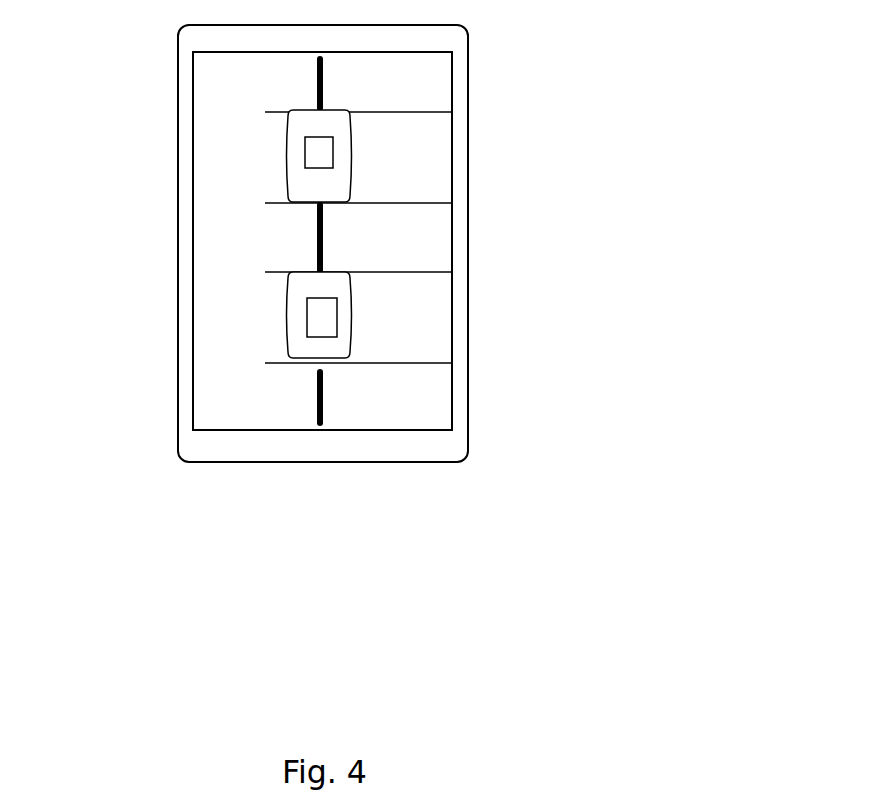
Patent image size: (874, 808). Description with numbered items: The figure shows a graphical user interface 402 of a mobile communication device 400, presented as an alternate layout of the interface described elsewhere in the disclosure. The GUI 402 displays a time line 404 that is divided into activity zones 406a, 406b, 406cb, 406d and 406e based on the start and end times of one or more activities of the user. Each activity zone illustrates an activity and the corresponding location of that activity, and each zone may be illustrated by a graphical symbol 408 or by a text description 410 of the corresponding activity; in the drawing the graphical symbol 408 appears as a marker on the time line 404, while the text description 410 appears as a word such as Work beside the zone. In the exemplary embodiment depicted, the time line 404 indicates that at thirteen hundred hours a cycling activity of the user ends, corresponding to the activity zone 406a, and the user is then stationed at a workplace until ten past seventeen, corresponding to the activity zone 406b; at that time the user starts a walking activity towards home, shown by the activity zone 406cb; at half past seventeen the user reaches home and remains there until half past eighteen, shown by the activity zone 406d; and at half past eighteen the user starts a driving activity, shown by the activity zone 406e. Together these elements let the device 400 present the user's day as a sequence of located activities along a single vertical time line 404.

The mobile communication device 400 is at (198, 40).
The graphical user interface 402 is at (212, 82).
The time line 404 is at (225, 130).
The activity zone 406a is at (427, 70).
The activity zone 406b is at (410, 178).
The activity zone 406cb is at (413, 242).
The activity zone 406d is at (410, 308).
The activity zone 406e is at (428, 397).
The graphical symbol 408 is at (323, 158).
The text description 410 is at (417, 150).